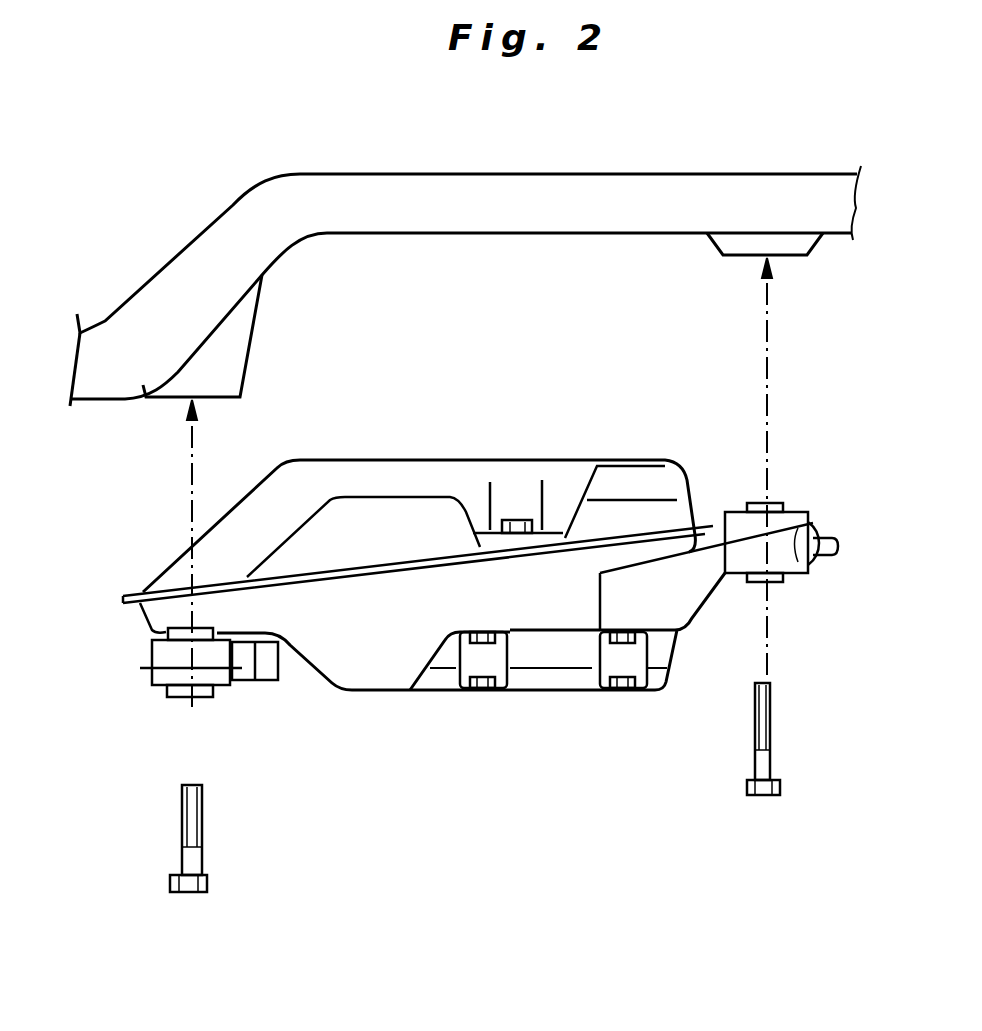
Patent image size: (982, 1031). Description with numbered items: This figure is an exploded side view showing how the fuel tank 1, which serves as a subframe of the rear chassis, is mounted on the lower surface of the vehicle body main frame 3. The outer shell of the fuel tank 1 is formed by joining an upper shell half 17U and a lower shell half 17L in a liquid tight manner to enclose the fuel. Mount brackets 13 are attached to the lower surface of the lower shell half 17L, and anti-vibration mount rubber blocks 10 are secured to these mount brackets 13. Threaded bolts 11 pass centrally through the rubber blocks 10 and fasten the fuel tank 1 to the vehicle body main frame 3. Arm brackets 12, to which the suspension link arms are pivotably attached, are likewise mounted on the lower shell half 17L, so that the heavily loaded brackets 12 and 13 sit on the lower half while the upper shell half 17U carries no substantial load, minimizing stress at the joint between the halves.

The fuel tank 1 is at (460, 573).
The vehicle body main frame 3 is at (623, 228).
The anti-vibration mount rubber block 10 is at (150, 623).
The threaded bolt 11 is at (202, 858).
The arm bracket 12 is at (545, 497).
The mount bracket 13 is at (161, 684).
The upper shell half 17U is at (338, 463).
The lower shell half 17L is at (367, 693).